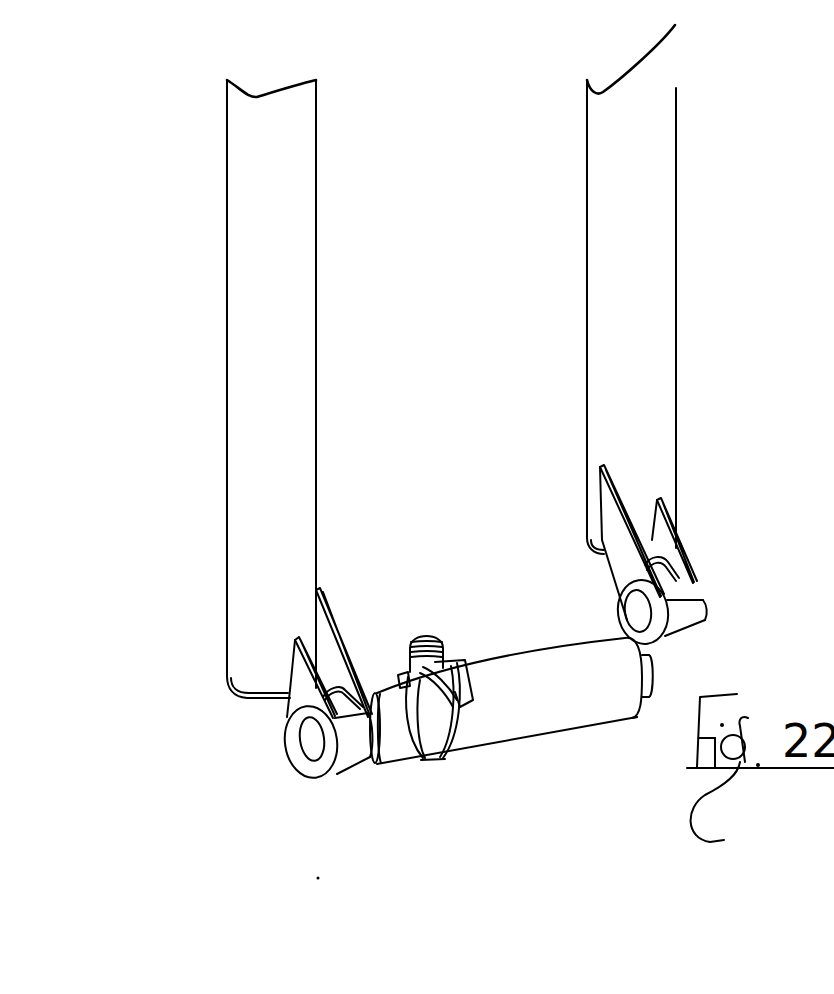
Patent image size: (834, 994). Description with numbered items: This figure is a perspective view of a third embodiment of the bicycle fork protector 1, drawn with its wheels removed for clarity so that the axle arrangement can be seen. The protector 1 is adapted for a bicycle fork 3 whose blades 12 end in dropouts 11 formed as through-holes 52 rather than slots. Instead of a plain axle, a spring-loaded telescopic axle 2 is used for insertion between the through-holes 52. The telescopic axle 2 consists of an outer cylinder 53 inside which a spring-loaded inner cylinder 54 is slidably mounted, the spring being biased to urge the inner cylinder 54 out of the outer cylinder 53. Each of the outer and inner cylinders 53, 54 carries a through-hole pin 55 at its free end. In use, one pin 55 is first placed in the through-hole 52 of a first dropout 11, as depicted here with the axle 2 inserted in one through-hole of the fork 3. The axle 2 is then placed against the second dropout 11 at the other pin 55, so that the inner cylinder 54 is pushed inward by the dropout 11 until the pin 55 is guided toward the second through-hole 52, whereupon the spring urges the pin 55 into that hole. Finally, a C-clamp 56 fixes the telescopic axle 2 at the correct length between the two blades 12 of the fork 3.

The bicycle fork protector 1 is at (413, 783).
The spring-loaded telescopic axle 2 is at (533, 740).
The bicycle fork 3 is at (233, 340).
The dropout 11 is at (290, 713).
The blade 12 is at (316, 315).
The through-hole 52 is at (308, 745).
The outer cylinder 53 is at (513, 657).
The spring-loaded inner cylinder 54 is at (375, 680).
The through-hole pin 55 is at (655, 670).
The C-clamp 56 is at (447, 757).